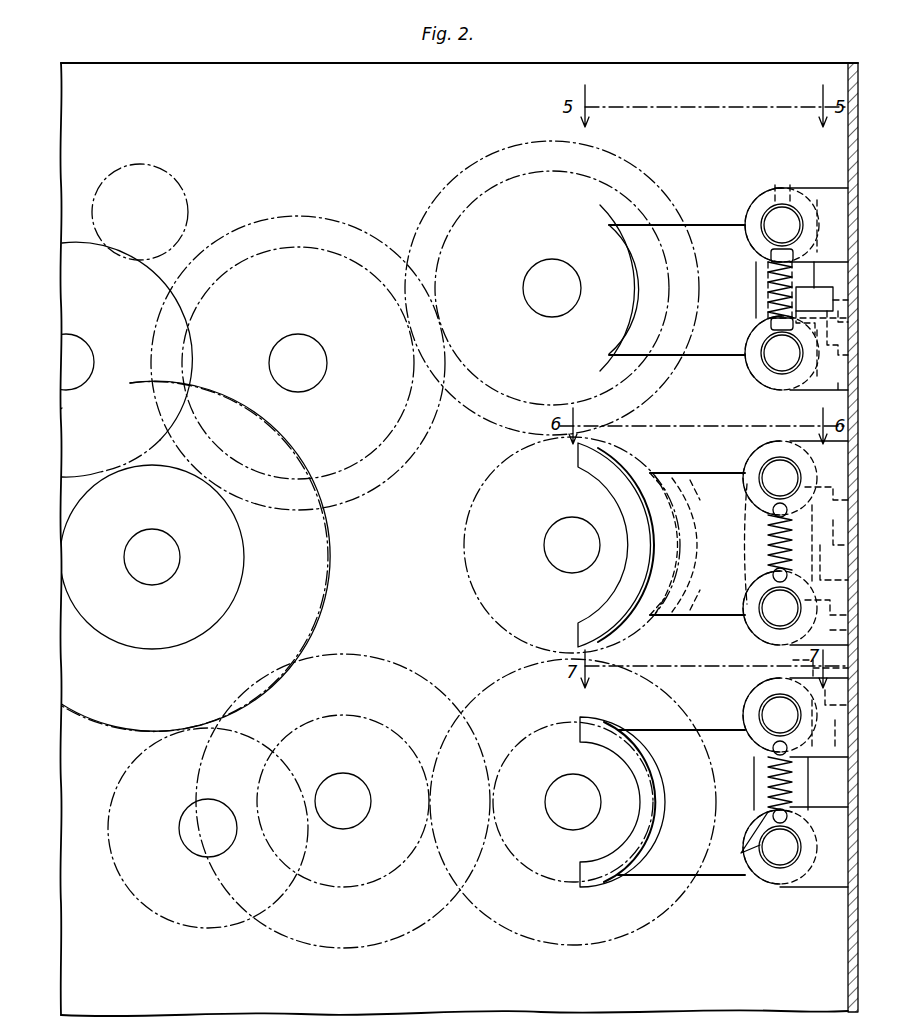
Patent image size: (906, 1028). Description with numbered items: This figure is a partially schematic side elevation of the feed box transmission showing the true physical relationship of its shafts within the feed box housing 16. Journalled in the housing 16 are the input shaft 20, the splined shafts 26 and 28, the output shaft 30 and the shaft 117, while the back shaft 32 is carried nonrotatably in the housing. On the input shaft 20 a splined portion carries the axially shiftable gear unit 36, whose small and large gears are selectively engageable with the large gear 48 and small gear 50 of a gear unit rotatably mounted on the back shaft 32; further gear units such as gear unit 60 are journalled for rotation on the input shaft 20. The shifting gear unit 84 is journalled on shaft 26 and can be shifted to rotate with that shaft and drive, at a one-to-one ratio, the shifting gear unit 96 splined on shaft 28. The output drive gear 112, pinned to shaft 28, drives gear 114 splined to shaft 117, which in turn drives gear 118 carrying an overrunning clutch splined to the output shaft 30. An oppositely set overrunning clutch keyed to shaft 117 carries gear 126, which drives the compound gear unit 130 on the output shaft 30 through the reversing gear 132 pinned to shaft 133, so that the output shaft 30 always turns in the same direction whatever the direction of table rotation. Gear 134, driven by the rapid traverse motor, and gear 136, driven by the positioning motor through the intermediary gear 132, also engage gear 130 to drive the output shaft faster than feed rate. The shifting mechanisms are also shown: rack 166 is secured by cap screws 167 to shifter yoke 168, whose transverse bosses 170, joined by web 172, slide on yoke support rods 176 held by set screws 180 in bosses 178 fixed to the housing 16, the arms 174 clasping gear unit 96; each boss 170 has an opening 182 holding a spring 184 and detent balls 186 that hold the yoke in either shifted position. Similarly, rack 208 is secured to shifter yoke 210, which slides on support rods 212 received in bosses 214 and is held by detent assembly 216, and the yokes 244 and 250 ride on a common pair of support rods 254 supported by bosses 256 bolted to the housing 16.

The feed box housing 16 is at (848, 137).
The input shaft 20 is at (556, 790).
The splined shaft 26 is at (546, 544).
The splined shaft 28 is at (537, 274).
The output shaft 30 is at (168, 576).
The back shaft 32 is at (355, 778).
The gear unit 36 is at (545, 882).
The large gear 48 is at (422, 938).
The small gear 50 is at (335, 890).
The gear unit 60 is at (500, 672).
The shifting gear unit 84 is at (462, 516).
The shifting gear unit 96 is at (464, 170).
The output drive gear 112 is at (597, 190).
The gear 114 is at (272, 216).
The shaft 117 is at (315, 378).
The gear 118 is at (122, 650).
The gear 126 is at (327, 262).
The compound gear unit 130 is at (330, 581).
The reversing gear 132 is at (100, 248).
The shaft 133 is at (80, 348).
The gear 134 is at (158, 920).
The gear 136 is at (166, 170).
The rack 166 is at (825, 348).
The cap screws 167 is at (842, 300).
The shifter yoke 168 is at (692, 214).
The transverse bosses 170 is at (760, 200).
The web 172 is at (816, 268).
The arms 174 is at (667, 248).
The yoke support rods 176 is at (783, 224).
The bosses 178 is at (832, 400).
The set screws 180 is at (752, 243).
The opening 182 is at (782, 186).
The spring 184 is at (764, 281).
The detent balls 186 is at (760, 322).
The rack 208 is at (800, 726).
The shifter yoke 210 is at (710, 878).
The support rods 212 is at (780, 862).
The bosses 214 is at (824, 888).
The detent assembly 216 is at (765, 786).
The yoke 244 is at (632, 606).
The yoke 250 is at (690, 610).
The support rods 254 is at (772, 468).
The bosses 256 is at (828, 540).